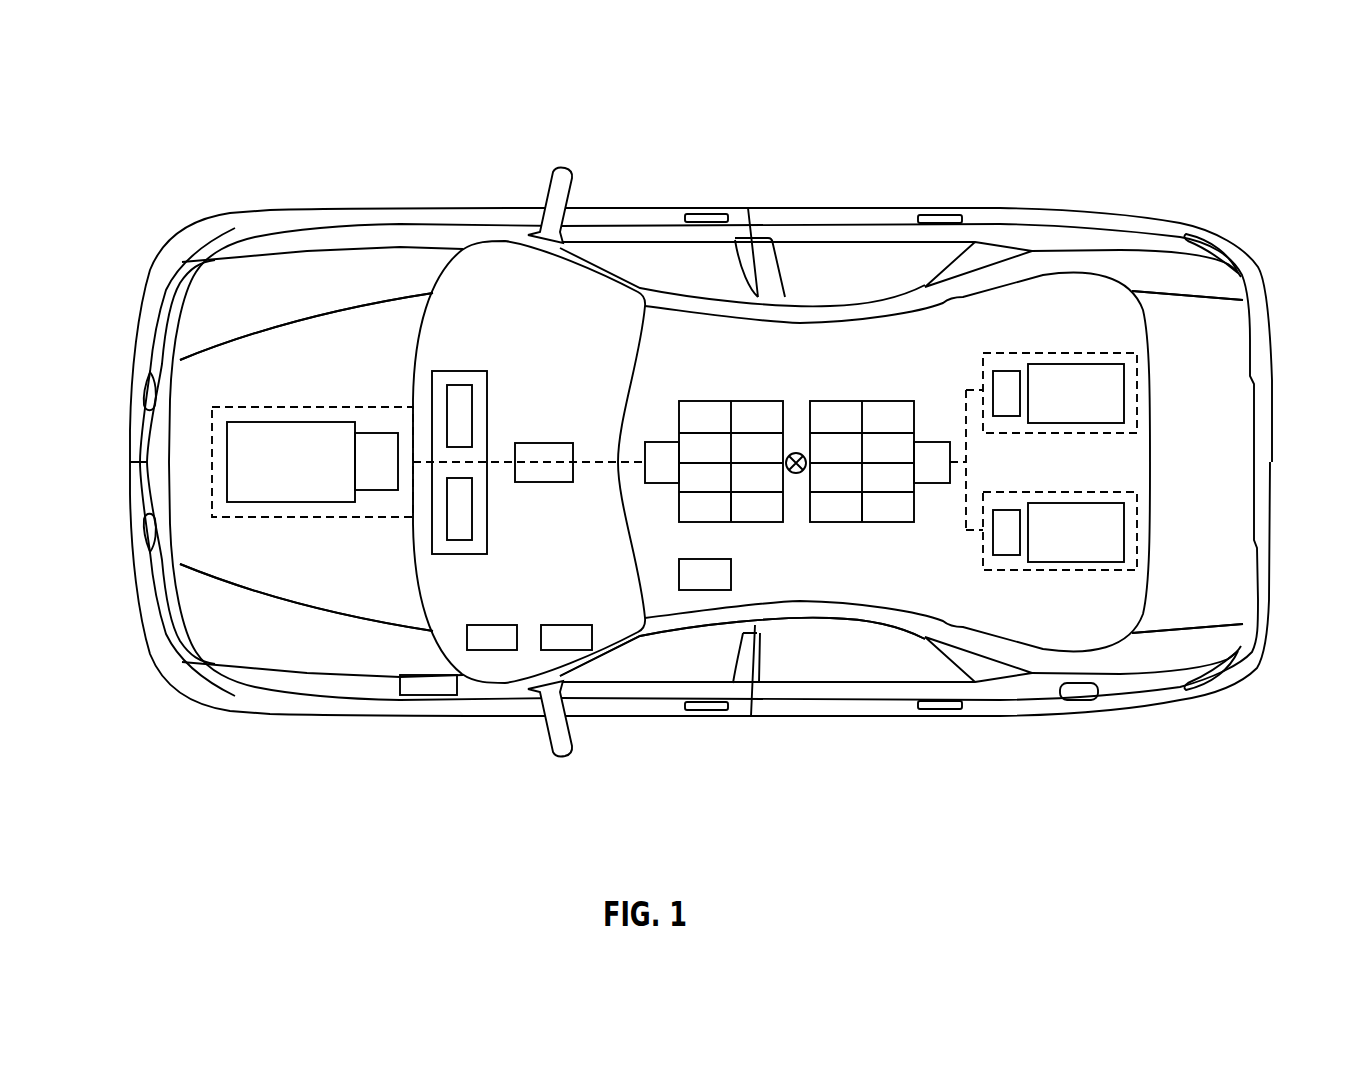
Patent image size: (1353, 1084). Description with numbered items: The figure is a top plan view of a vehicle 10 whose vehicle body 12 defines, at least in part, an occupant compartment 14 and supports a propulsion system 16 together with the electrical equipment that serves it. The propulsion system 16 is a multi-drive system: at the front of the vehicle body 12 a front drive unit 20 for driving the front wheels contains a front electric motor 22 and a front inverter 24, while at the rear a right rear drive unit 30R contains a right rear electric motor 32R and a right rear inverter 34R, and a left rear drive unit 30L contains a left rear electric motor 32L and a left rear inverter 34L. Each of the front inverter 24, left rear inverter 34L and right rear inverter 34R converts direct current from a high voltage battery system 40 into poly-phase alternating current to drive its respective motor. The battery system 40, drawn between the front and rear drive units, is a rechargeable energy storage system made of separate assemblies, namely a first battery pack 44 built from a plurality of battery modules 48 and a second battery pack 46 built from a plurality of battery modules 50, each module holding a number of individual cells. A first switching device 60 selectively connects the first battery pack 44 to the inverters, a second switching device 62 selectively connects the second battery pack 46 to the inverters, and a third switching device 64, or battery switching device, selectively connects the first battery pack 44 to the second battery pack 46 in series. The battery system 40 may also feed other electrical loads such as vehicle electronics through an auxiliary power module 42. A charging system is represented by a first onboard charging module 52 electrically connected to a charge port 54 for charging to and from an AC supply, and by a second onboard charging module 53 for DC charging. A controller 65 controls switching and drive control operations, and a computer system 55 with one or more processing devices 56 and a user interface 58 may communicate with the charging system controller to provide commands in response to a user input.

The vehicle 10 is at (228, 103).
The vehicle body 12 is at (759, 199).
The occupant compartment 14 is at (825, 613).
The propulsion system 16 is at (283, 572).
The front drive unit 20 is at (344, 407).
The front electric motor 22 is at (290, 422).
The front inverter 24 is at (378, 490).
The right rear drive unit 30R is at (1137, 383).
The left rear drive unit 30L is at (1137, 523).
The right rear electric motor 32R is at (1077, 364).
The left rear electric motor 32L is at (1053, 563).
The right rear inverter 34R is at (998, 371).
The left rear inverter 34L is at (998, 556).
The battery system 40 is at (740, 376).
The auxiliary power module 42 is at (705, 559).
The first battery pack 44 is at (760, 522).
The second battery pack 46 is at (845, 522).
The battery modules 48 is at (757, 413).
The battery modules 50 is at (825, 413).
The first onboard charging module 52 is at (560, 625).
The second onboard charging module 53 is at (488, 625).
The charge port 54 is at (423, 675).
The computer system 55 is at (458, 343).
The processing devices 56 is at (472, 415).
The user interface 58 is at (472, 510).
The first switching device 60 is at (665, 448).
The second switching device 62 is at (938, 440).
The third switching device 64 is at (797, 473).
The controller 65 is at (540, 443).